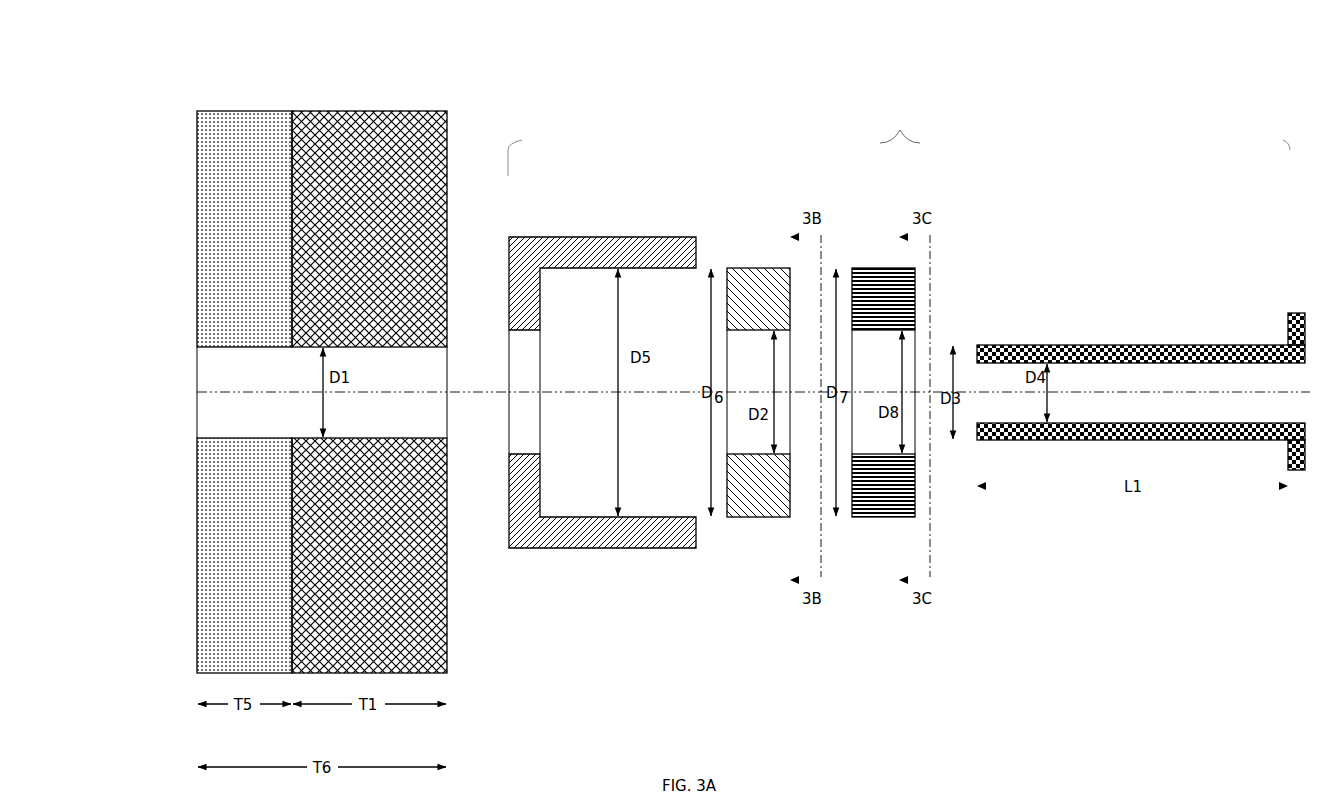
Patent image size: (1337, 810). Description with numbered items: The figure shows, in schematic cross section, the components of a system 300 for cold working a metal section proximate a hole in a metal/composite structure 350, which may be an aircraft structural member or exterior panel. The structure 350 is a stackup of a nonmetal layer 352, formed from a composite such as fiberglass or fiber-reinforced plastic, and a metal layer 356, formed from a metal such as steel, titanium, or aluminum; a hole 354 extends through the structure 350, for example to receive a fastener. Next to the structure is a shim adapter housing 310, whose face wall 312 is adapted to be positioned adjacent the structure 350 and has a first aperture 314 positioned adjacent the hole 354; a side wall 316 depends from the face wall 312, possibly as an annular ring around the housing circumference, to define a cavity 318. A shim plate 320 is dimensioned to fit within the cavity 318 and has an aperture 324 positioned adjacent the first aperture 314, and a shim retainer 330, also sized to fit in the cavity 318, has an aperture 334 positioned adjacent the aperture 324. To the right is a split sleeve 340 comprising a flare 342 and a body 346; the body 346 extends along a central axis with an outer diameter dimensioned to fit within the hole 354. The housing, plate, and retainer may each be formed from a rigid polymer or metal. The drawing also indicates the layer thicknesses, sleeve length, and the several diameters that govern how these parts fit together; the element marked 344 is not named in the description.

The system 300 is at (899, 133).
The shim adapter housing 310 is at (595, 356).
The face wall 312 is at (508, 266).
The first aperture 314 is at (540, 377).
The side wall 316 is at (603, 237).
The cavity 318 is at (618, 392).
The shim plate 320 is at (758, 392).
The aperture 324 is at (758, 392).
The shim retainer 330 is at (883, 392).
The aperture 334 is at (883, 392).
The split sleeve 340 is at (1141, 379).
The flare 342 is at (1297, 313).
The tube lower wall / lumen 344 is at (1183, 377).
The body 346 is at (1148, 345).
The structure 350 is at (344, 341).
The nonmetal layer 352 is at (245, 111).
The hole 354 is at (427, 377).
The metal layer 356 is at (371, 111).